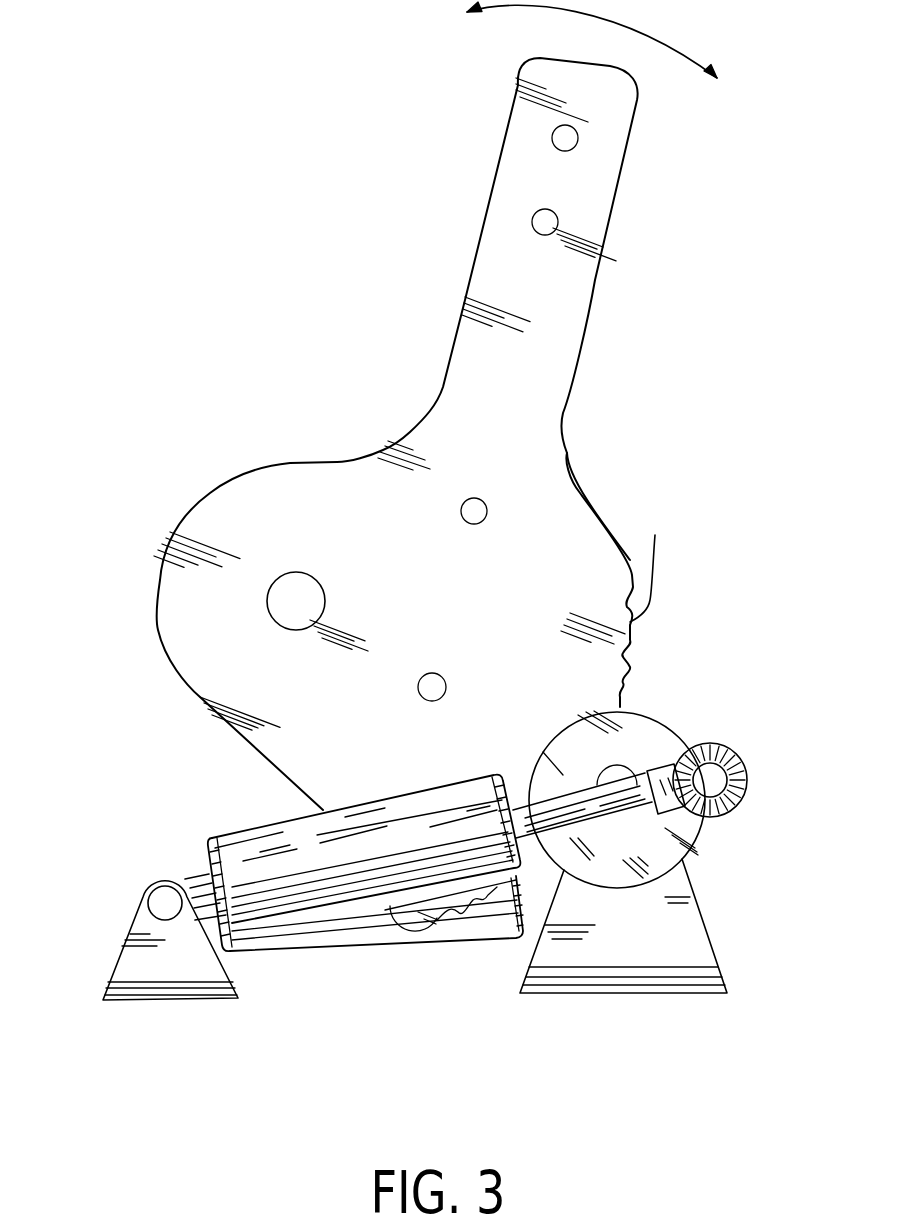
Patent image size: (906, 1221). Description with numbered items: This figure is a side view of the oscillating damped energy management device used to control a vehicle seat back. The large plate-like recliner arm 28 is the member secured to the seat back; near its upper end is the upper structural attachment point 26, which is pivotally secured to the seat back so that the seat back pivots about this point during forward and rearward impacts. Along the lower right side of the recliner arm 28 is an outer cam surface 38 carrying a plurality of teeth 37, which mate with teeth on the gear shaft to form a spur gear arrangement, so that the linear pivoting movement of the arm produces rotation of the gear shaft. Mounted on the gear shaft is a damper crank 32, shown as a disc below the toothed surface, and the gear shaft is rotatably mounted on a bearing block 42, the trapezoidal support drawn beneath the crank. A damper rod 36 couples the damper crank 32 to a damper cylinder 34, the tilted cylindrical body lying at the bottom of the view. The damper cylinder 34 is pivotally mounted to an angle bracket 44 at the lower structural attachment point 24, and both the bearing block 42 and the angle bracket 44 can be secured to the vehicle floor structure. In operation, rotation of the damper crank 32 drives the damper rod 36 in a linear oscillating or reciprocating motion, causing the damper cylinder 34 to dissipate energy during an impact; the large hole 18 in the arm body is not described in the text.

The pivot hole 18 is at (296, 600).
The lower structural attachment point 24 is at (165, 900).
The upper structural attachment point 26 is at (552, 136).
The recliner arm 28 is at (527, 362).
The damper crank 32 is at (660, 737).
The damper cylinder 34 is at (290, 843).
The damper rod 36 is at (640, 836).
The teeth 37 is at (655, 540).
The outer cam surface 38 is at (580, 493).
The bearing block 42 is at (713, 937).
The angle bracket 44 is at (137, 967).